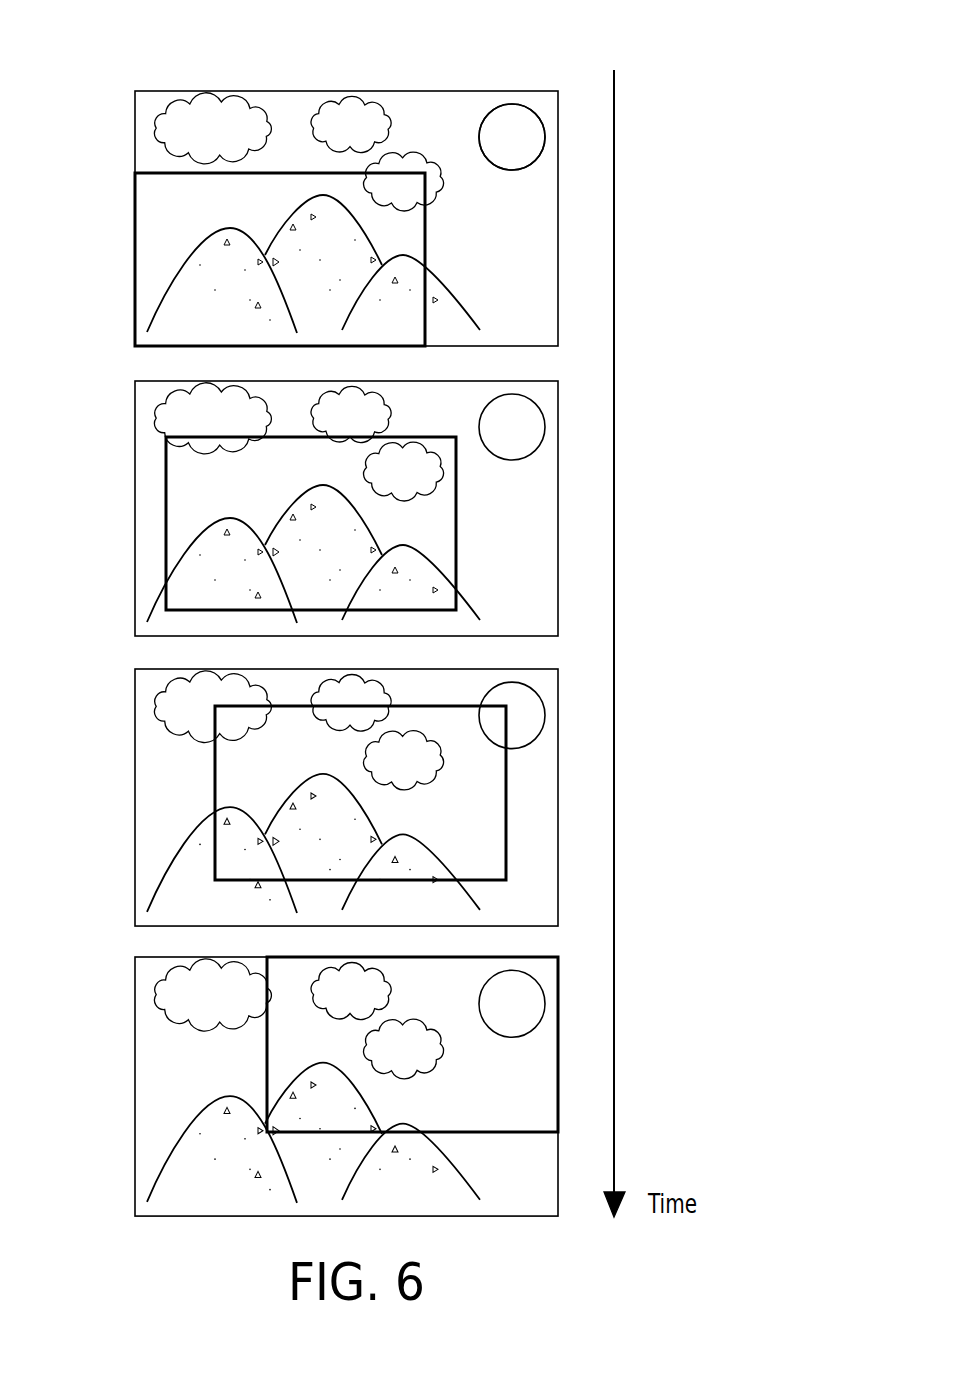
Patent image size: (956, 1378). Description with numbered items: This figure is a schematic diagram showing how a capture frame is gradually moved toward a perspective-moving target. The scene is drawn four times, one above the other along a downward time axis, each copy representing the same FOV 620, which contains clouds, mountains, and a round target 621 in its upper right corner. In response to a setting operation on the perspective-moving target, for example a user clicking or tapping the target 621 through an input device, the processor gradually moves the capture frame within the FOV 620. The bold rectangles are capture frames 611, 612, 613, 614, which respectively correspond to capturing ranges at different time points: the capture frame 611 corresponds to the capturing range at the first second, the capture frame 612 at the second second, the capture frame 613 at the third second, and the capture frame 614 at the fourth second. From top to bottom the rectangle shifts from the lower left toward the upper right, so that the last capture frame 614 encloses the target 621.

The FOV 620 is at (416, 89).
The target 621 is at (509, 115).
The capture frame 611 is at (135, 247).
The capture frame 612 is at (166, 501).
The capture frame 613 is at (215, 775).
The capture frame 614 is at (267, 1060).